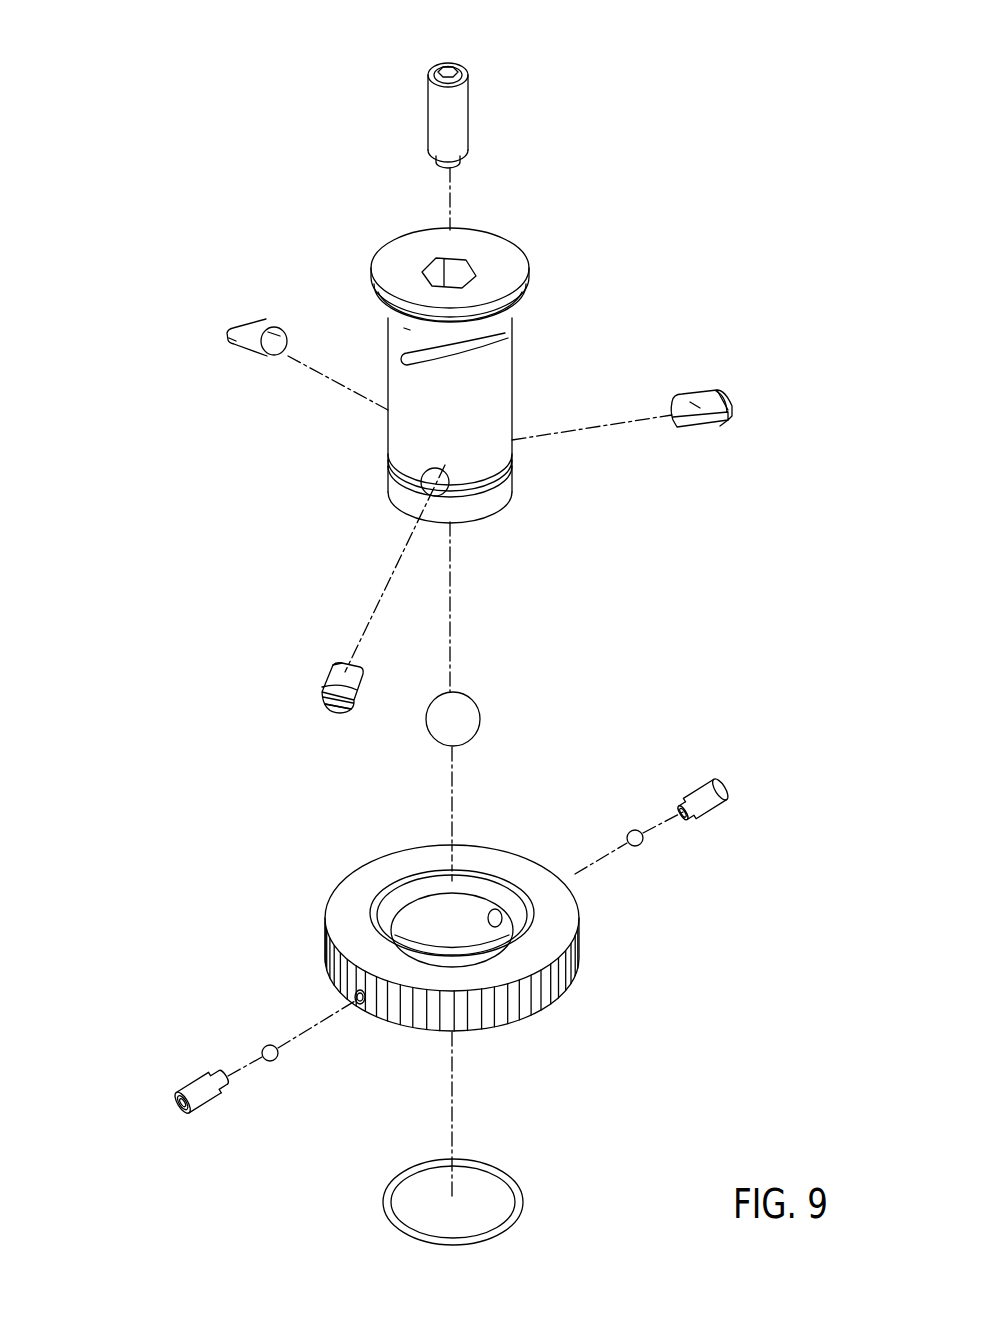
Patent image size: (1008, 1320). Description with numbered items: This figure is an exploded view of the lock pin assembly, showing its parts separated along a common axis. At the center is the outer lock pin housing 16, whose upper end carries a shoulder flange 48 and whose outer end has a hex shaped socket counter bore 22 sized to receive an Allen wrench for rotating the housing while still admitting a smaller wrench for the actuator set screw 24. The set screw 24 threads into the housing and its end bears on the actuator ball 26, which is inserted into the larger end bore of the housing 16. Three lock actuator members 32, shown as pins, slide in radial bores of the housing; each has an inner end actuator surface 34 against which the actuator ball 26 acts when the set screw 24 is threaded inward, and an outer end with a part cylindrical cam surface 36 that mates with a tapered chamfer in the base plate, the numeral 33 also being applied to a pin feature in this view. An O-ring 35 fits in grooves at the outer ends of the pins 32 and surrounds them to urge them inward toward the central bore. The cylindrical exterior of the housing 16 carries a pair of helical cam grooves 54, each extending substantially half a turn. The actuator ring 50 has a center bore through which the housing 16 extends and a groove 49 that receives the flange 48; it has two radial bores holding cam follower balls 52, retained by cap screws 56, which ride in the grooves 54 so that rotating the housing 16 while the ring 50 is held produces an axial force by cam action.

The lock pin housing 16 is at (443, 402).
The hex shaped socket counter bore 22 is at (458, 270).
The actuator set screw 24 is at (455, 115).
The actuator ball 26 is at (453, 715).
The lock actuator member 32 is at (247, 312).
The pin tip 33 is at (728, 427).
The inner end actuator surface 34 is at (282, 340).
The O-ring 35 is at (390, 1218).
The cam surface 36 is at (723, 393).
The shoulder flange 48 is at (529, 277).
The groove 49 is at (405, 893).
The actuator ring 50 is at (490, 863).
The cam follower ball 52 is at (638, 847).
The helical cam groove 54 is at (403, 332).
The cap screw 56 is at (710, 797).